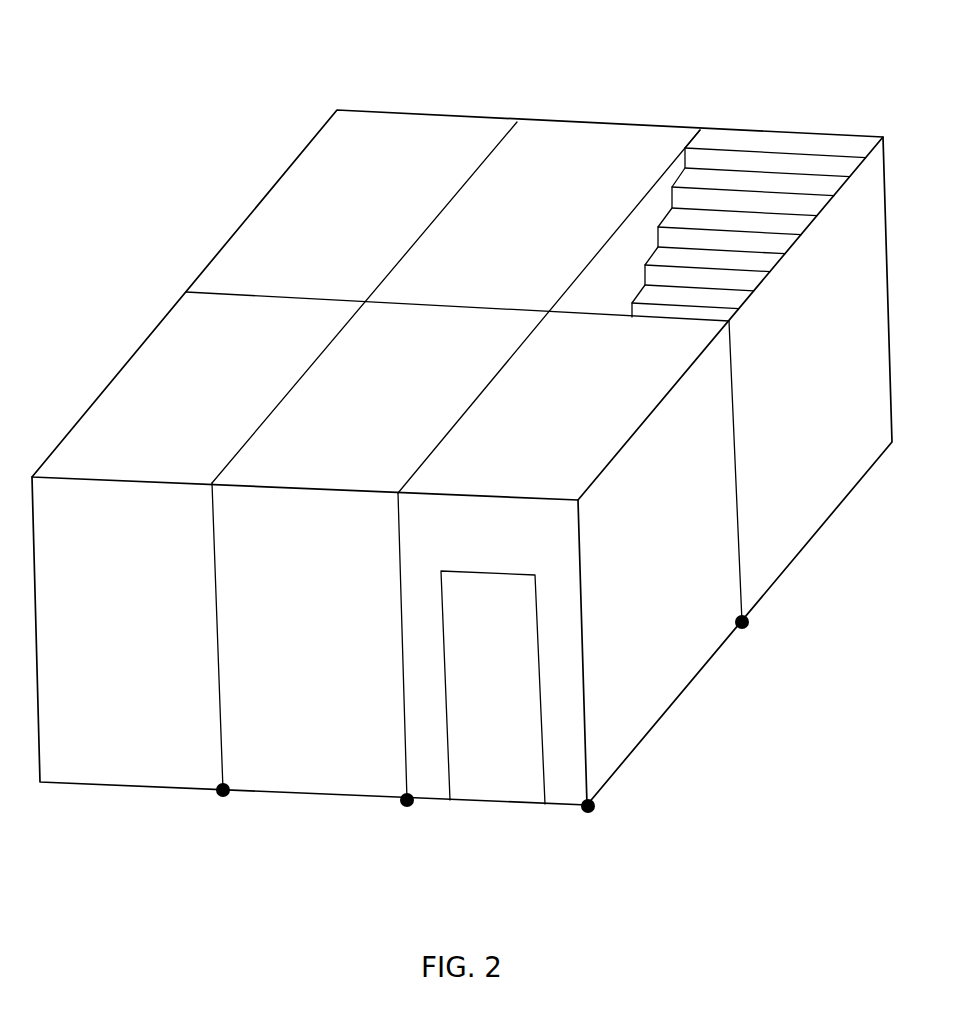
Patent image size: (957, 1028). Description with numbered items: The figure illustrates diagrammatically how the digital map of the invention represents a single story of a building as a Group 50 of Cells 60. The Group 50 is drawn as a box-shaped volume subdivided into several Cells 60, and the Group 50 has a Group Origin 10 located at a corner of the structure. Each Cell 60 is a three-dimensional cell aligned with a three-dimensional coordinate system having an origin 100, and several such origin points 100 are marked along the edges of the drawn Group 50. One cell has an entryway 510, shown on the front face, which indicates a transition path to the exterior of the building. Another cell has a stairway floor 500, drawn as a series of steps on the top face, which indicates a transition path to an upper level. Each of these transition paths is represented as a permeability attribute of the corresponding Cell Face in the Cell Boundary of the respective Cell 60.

The Group Origin 10 is at (462, 453).
The Group 50 is at (343, 92).
The Cell 60 is at (423, 140).
The origin 100 is at (220, 797).
The stairway floor 500 is at (812, 163).
The entryway 510 is at (493, 758).